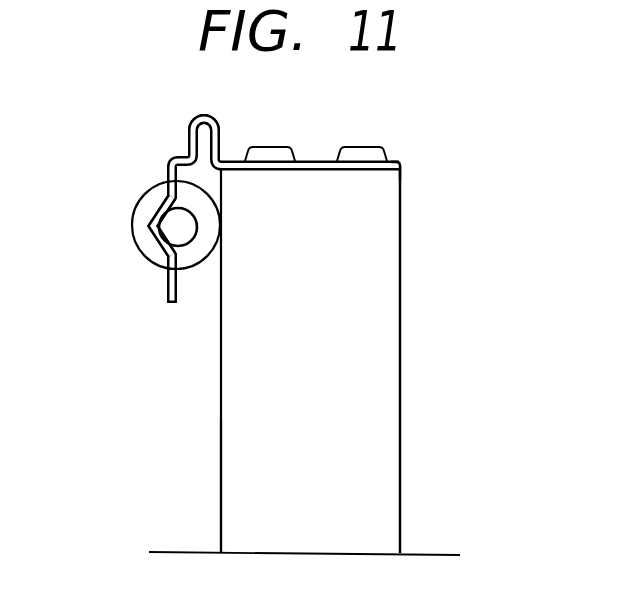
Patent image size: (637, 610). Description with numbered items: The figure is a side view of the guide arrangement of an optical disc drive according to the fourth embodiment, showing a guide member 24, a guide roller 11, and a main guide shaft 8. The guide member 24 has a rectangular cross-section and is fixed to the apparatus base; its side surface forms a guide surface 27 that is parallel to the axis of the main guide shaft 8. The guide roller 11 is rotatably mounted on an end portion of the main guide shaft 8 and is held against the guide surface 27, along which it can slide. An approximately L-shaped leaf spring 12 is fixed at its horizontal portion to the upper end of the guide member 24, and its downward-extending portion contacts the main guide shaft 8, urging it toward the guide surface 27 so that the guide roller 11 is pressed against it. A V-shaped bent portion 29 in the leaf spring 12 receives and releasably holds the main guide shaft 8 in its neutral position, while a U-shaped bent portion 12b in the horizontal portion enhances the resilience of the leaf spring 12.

The main guide shaft 8 is at (183, 236).
The guide roller 11 is at (141, 209).
The leaf spring 12 is at (220, 134).
The U-shaped bent portion 12b is at (204, 114).
The guide member 24 is at (402, 374).
The guide surface 27 is at (207, 492).
The V-shaped bent portion 29 is at (151, 226).